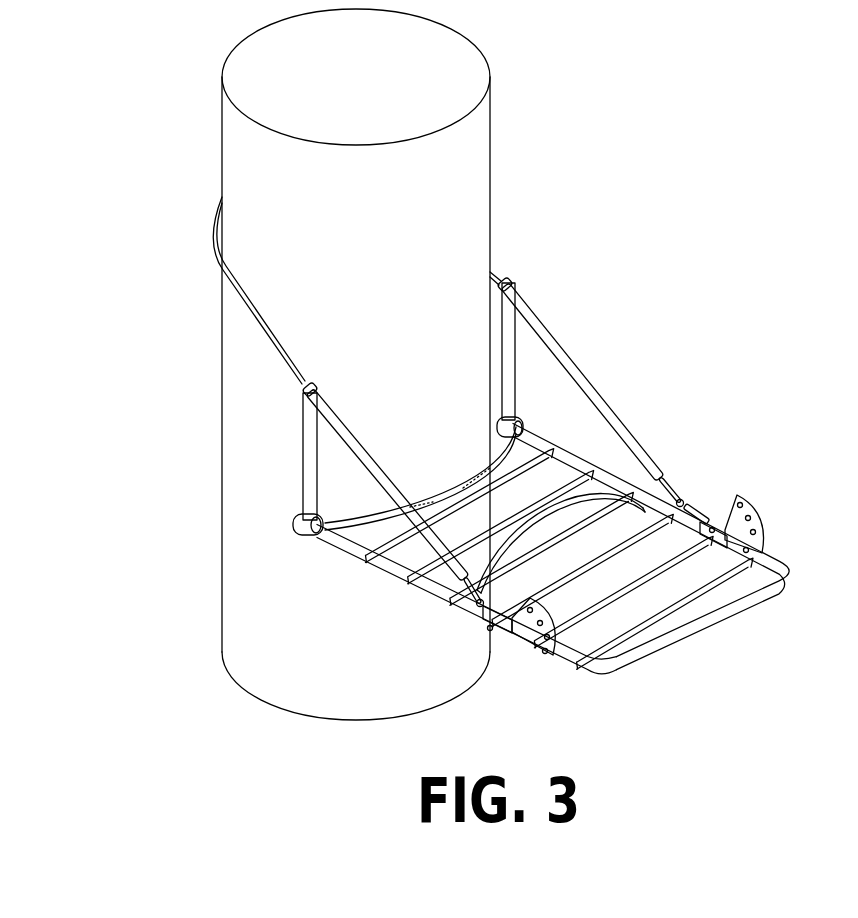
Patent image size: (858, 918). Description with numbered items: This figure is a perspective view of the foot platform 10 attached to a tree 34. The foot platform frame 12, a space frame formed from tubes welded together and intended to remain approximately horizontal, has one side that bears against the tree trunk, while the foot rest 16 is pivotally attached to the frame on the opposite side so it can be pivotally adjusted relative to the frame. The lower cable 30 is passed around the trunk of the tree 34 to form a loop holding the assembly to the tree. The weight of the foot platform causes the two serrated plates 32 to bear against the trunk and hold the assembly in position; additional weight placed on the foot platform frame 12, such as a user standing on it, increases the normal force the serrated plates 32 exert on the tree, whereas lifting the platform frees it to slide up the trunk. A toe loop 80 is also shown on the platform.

The foot platform 10 is at (630, 350).
The foot platform frame 12 is at (400, 577).
The foot rest 16 is at (748, 608).
The lower cable 30 is at (215, 252).
The serrated plate 32 is at (423, 503).
The tree 34 is at (267, 218).
The toe loop 80 is at (603, 500).